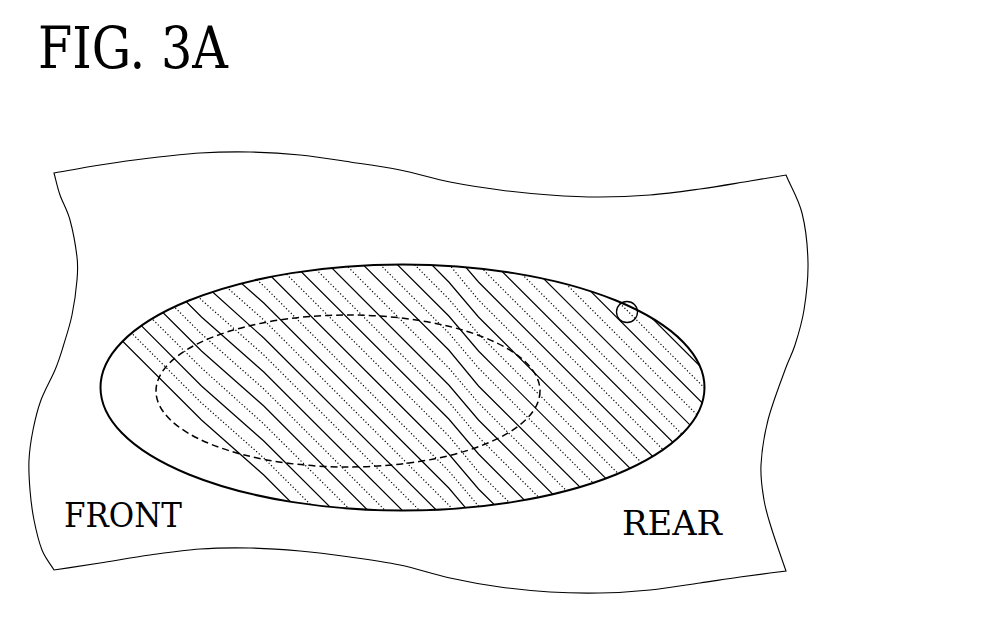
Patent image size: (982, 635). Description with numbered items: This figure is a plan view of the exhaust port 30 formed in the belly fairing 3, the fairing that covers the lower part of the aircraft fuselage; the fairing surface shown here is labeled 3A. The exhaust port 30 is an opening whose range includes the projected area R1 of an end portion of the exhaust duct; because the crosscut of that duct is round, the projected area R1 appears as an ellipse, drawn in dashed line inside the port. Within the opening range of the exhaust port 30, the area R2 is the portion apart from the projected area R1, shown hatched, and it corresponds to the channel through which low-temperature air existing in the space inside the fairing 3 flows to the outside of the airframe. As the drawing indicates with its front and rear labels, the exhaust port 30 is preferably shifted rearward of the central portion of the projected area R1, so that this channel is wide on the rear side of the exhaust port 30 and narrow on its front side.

The belly fairing 3 is at (726, 212).
The surface of sheet member 3A is at (767, 342).
The exhaust port 30 is at (619, 301).
The projected area R1 is at (345, 315).
The area R2 is at (527, 285).